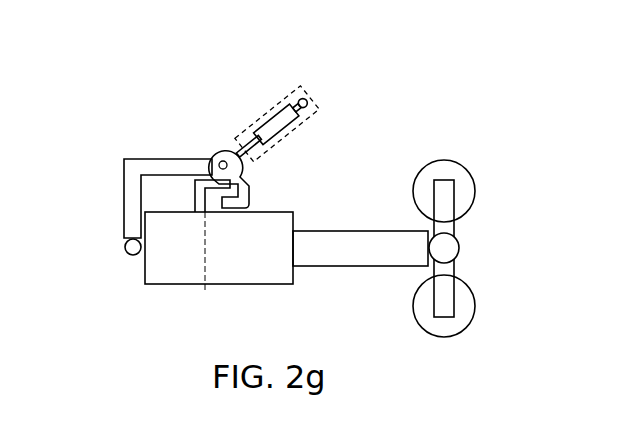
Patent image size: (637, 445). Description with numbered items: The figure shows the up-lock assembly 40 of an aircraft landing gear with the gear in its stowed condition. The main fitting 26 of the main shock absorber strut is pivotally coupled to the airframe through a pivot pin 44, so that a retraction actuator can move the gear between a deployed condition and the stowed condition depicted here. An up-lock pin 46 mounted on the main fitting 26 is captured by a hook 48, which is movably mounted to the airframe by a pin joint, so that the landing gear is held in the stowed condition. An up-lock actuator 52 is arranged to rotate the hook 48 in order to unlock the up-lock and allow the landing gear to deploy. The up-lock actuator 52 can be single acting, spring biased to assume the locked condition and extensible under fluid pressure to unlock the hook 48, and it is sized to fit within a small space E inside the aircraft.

The main fitting 26 is at (255, 287).
The up-lock assembly 40 is at (245, 100).
The pivot pin 44 is at (122, 243).
The up-lock pin 46 is at (193, 200).
The hook 48 is at (264, 186).
The up-lock actuator 52 is at (274, 102).
The small space E is at (318, 115).